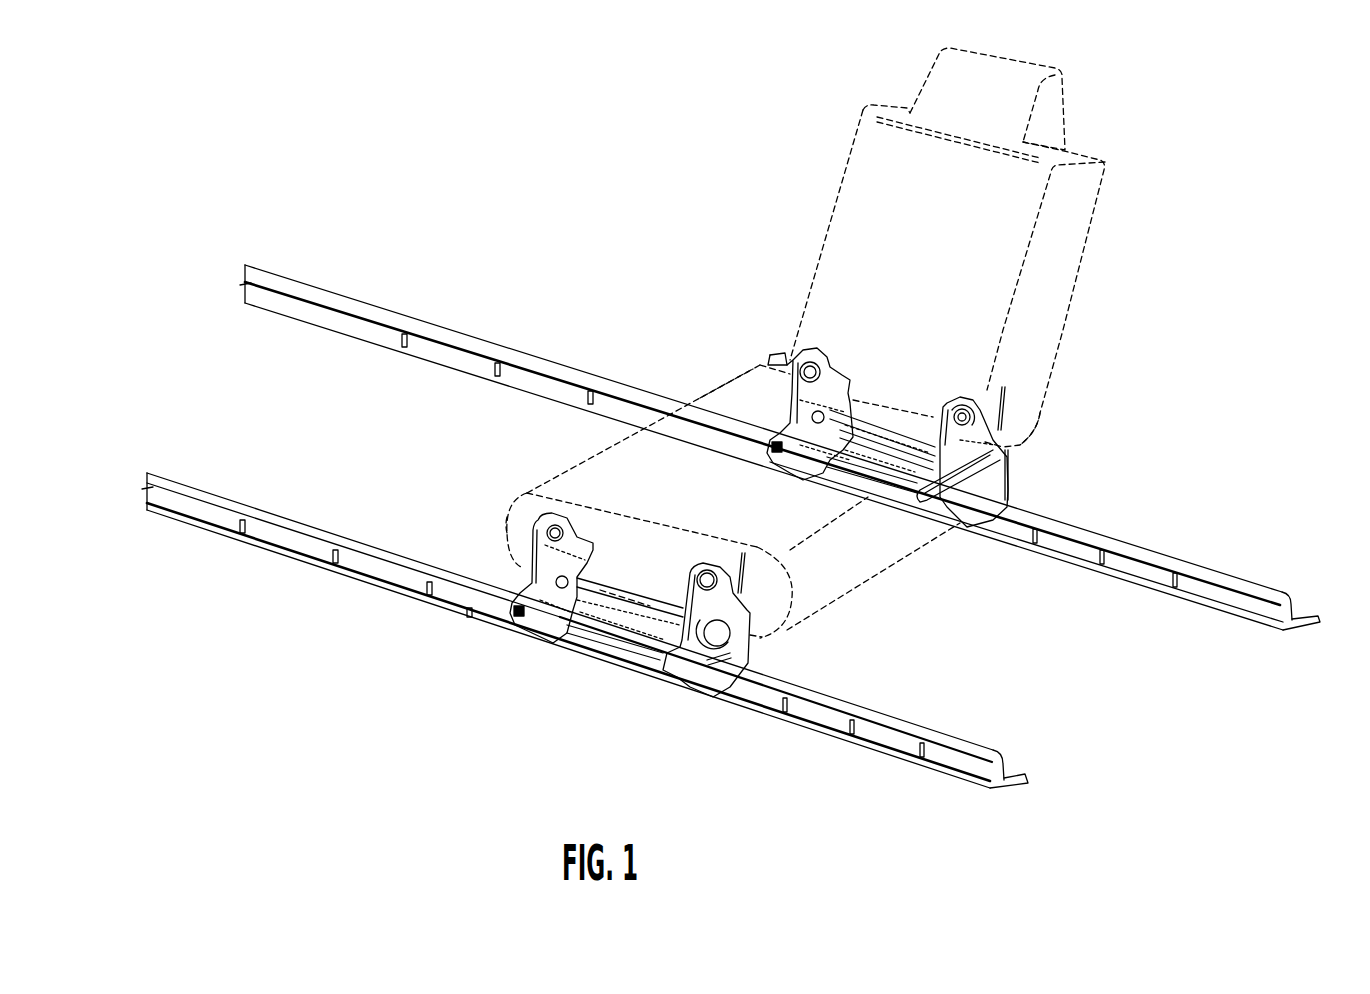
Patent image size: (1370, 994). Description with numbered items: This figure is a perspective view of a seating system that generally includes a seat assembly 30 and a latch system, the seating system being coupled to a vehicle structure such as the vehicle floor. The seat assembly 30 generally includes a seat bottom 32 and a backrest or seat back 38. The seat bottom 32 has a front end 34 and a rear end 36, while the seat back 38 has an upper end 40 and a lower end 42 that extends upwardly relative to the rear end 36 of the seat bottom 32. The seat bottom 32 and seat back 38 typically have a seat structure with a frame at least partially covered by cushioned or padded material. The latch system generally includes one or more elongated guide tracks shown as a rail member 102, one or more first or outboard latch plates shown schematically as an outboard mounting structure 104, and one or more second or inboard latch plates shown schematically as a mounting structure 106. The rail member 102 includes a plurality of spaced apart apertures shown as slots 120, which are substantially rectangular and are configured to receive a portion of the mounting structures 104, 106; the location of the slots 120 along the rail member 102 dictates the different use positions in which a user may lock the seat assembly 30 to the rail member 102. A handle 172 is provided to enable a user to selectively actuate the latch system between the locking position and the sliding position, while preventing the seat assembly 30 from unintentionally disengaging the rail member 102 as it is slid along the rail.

The seat assembly 30 is at (809, 345).
The seat bottom 32 is at (852, 562).
The front end 34 is at (507, 533).
The rear end 36 is at (743, 393).
The seat back 38 is at (873, 183).
The upper end 40 is at (1075, 237).
The lower end 42 is at (1020, 410).
The rail member 102 is at (510, 333).
The outboard mounting structure 104 is at (803, 480).
The mounting structure 106 is at (793, 350).
The slots 120 is at (590, 402).
The handle 172 is at (987, 467).